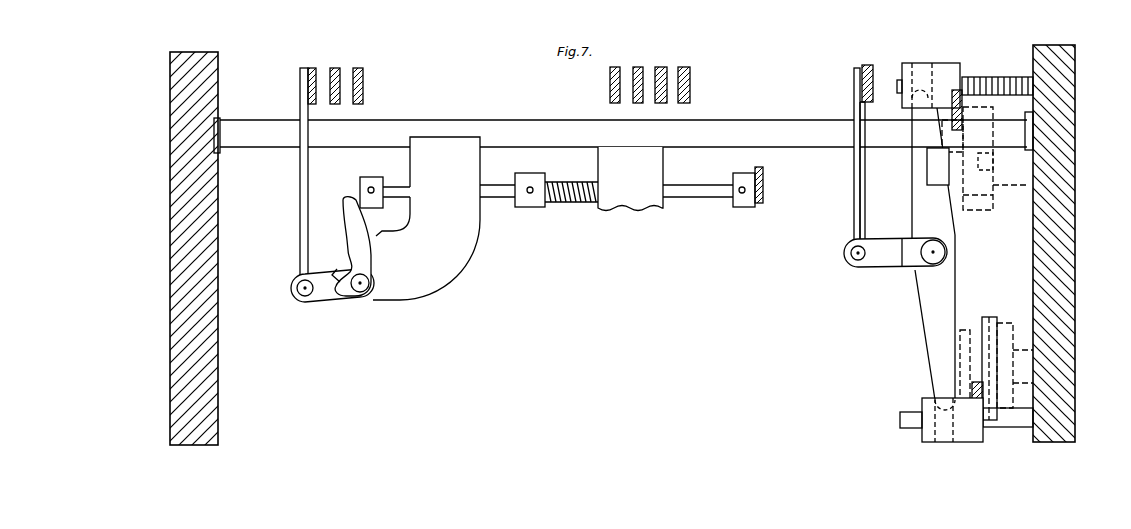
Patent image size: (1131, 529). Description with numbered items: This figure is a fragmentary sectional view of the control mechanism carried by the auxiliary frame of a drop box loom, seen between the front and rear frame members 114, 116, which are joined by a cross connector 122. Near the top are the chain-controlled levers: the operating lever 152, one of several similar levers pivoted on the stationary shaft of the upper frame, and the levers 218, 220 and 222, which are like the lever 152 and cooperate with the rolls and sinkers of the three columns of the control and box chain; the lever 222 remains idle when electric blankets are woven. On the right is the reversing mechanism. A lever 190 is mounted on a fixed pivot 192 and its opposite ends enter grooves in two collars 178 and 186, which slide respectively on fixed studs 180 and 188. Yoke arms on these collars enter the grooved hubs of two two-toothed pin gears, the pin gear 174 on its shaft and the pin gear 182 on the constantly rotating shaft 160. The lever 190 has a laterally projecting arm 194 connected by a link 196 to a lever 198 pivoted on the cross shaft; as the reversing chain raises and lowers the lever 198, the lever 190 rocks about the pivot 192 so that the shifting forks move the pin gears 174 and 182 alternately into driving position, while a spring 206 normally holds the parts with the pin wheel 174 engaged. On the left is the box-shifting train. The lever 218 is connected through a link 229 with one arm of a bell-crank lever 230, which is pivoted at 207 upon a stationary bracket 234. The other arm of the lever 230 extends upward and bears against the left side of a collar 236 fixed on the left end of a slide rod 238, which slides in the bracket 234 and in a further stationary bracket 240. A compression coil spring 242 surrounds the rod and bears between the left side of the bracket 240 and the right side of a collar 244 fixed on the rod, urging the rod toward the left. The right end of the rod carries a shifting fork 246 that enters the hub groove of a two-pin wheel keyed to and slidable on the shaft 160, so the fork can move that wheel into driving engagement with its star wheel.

The front frame member 114 is at (1074, 283).
The rear frame member 116 is at (178, 245).
The cross connector 122 is at (762, 123).
The operating lever 152 is at (683, 65).
The shaft 160 is at (1006, 172).
The pin gear 174 is at (986, 326).
The collar 178 is at (925, 440).
The fixed stud 180 is at (935, 368).
The pin gear 182 is at (966, 204).
The collar 186 is at (938, 62).
The fixed stud 188 is at (999, 98).
The lever 190 is at (932, 353).
The fixed pivot 192 is at (946, 251).
The arm 194 is at (883, 267).
The link 196 is at (855, 207).
The lever 198 is at (868, 65).
The spring 206 is at (976, 76).
The pivot 207 is at (371, 278).
The lever 218 is at (312, 67).
The lever 220 is at (336, 67).
The lever 222 is at (364, 78).
The link 229 is at (302, 193).
The bell-crank lever 230 is at (325, 306).
The stationary bracket 234 is at (428, 282).
The collar 236 is at (362, 189).
The slide rod 238 is at (497, 199).
The stationary bracket 240 is at (643, 207).
The compression coil spring 242 is at (572, 203).
The collar 244 is at (530, 178).
The shifting fork 246 is at (765, 178).